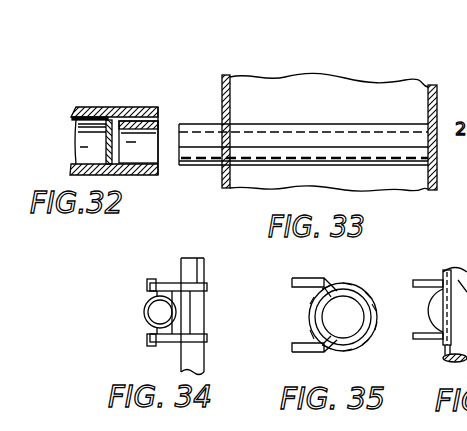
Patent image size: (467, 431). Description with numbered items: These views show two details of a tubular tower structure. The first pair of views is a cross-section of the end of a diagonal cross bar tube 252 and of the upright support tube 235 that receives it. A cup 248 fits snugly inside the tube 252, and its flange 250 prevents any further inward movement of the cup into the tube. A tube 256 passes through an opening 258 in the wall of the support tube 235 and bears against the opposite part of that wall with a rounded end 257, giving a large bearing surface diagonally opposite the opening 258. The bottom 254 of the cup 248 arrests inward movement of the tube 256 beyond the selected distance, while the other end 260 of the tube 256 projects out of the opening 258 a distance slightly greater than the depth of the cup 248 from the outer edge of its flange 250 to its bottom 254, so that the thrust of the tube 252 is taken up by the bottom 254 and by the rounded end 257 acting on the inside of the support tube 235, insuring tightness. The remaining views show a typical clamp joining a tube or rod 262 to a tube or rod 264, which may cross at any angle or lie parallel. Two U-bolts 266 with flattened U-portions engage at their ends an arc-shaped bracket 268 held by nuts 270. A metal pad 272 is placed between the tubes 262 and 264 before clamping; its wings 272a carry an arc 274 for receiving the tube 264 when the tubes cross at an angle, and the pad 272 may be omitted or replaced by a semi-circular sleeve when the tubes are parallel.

In FIG. 32, the cup 248 is at (137, 152).
In FIG. 32, the flange 250 is at (158, 128).
In FIG. 32, the diagonal cross bar tube 252 is at (88, 148).
In FIG. 32, the bottom 254 is at (103, 117).
In FIG. 33, the upright support tube 235 is at (338, 103).
In FIG. 33, the tube 256 is at (338, 147).
In FIG. 33, the rounded end 257 is at (416, 126).
In FIG. 33, the opening 258 is at (228, 127).
In FIG. 33, the other end 260 is at (196, 148).
In FIG. 34, the tube or rod 262 is at (198, 258).
In FIG. 35, the tube or rod 262 is at (352, 290).
In FIG. 34, the tube or rod 264 is at (160, 320).
In FIG. 34, the U-bolt 266 is at (208, 286).
In FIG. 34, the arc-shaped bracket 268 is at (153, 309).
In FIG. 34, the nut 270 is at (152, 341).
In FIG. 35, the metal pad 272 is at (302, 278).
In FIG. 36, the wing 272a is at (433, 282).
In FIG. 36, the arc 274 is at (432, 305).